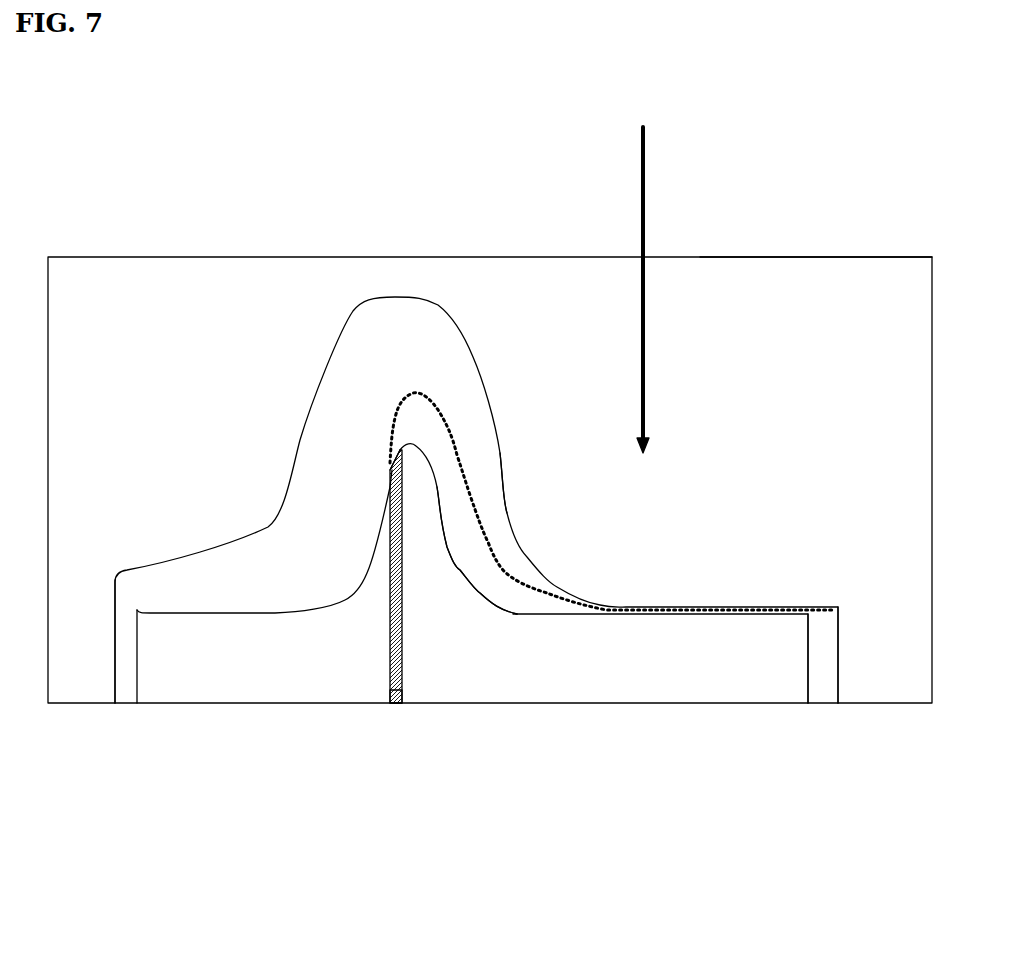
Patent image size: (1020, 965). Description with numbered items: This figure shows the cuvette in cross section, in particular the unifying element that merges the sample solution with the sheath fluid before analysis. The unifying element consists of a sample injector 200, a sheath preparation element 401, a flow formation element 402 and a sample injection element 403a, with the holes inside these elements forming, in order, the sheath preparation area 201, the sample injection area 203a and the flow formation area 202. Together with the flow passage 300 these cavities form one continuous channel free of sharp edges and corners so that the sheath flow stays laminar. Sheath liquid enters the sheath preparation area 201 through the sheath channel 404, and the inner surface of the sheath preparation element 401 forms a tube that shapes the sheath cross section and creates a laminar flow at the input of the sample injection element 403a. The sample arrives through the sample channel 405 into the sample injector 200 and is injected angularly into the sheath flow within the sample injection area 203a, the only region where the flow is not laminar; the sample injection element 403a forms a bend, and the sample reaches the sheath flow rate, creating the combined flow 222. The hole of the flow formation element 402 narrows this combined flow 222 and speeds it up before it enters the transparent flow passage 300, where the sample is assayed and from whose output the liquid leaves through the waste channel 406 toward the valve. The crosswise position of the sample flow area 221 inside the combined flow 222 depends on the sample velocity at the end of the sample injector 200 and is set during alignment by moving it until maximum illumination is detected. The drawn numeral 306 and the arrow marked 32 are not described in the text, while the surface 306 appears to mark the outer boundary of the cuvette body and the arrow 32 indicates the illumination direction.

The light irradiation direction 32 is at (647, 240).
The sample injector 200 is at (388, 470).
The sheath preparation area 201 is at (253, 605).
The flow formation area 202 is at (517, 590).
The sample injection area 203a is at (433, 330).
The sample flow area 221 is at (500, 560).
The combined flow 222 is at (453, 580).
The flow passage 300 is at (617, 612).
The encapsulation layer surface 306 is at (818, 280).
The sheath preparation element 401 is at (178, 307).
The flow formation element 402 is at (530, 293).
The sample injection element 403a is at (390, 277).
The sheath channel 404 is at (122, 610).
The sample channel 405 is at (393, 703).
The waste channel 406 is at (832, 660).